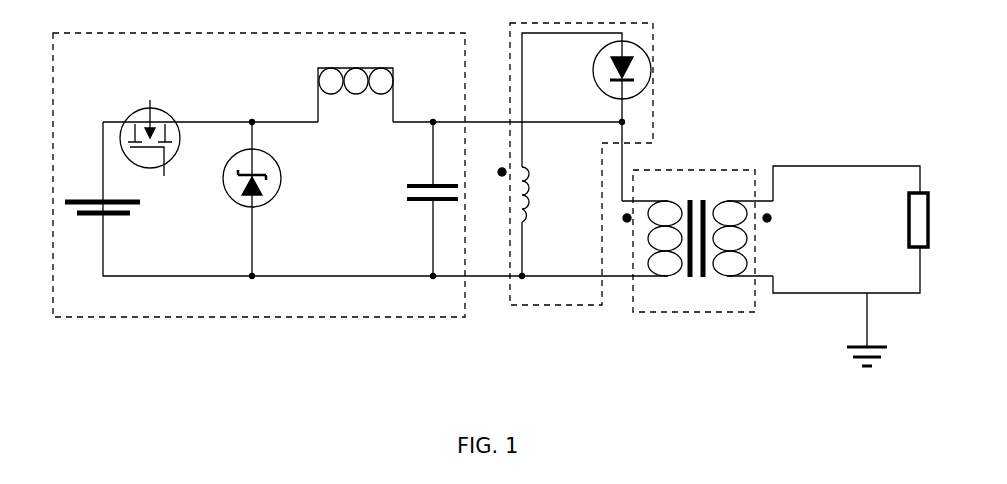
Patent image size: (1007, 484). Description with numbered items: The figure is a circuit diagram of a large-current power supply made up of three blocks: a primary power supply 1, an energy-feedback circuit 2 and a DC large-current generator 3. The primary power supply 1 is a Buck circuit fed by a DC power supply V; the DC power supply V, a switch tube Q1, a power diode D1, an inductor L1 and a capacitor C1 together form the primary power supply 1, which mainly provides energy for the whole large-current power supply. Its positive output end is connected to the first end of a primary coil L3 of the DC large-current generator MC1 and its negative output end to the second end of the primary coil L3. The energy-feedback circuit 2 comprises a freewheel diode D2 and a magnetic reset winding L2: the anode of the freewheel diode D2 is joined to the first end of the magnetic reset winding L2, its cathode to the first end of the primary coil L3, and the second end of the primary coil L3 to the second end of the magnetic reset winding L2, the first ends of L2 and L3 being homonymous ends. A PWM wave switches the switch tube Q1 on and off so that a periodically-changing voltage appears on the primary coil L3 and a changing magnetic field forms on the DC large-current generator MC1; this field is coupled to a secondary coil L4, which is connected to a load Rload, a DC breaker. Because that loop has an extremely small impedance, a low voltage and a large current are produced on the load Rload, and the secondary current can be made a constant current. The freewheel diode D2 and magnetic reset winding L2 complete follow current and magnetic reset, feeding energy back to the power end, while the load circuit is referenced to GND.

The primary power supply 1 is at (188, 317).
The energy-feedback circuit 2 is at (520, 305).
The DC large-current generator 3 is at (660, 312).
The switch tube Q1 is at (150, 127).
The DC power supply V is at (110, 206).
The power diode D1 is at (265, 199).
The inductor L1 is at (355, 81).
The capacitor C1 is at (412, 199).
The magnetic reset winding L2 is at (534, 194).
The freewheel diode D2 is at (606, 121).
The DC large-current generator MC1 is at (693, 227).
The primary coil L3 is at (652, 252).
The secondary coil L4 is at (743, 252).
The load Rload is at (850, 229).
The ground GND is at (867, 342).